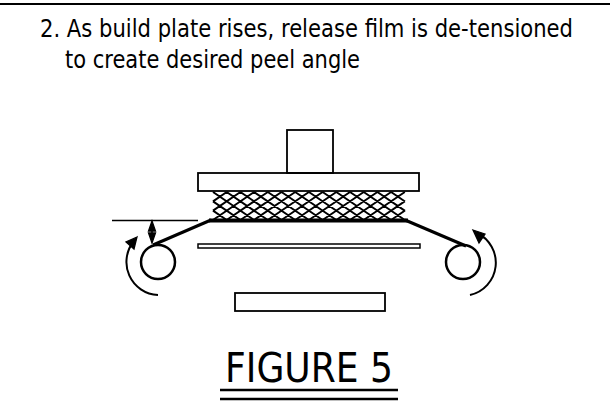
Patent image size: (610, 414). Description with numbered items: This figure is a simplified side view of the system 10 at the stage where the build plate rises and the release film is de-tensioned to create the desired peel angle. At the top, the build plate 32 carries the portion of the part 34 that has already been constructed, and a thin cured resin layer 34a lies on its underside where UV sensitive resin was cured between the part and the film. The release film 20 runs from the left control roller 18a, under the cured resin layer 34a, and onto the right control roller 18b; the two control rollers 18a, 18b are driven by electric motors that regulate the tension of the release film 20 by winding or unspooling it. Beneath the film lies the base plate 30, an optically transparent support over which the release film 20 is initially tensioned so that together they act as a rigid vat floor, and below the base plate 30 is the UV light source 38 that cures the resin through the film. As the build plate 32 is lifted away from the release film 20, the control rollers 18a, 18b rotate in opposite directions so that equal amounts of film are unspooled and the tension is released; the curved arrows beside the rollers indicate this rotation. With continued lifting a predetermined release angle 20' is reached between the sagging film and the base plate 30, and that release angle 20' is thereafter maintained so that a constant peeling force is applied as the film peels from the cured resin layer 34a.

The system 10 is at (195, 146).
The build plate 32 is at (359, 173).
The 3D part 34 is at (403, 198).
The cured resin layer 34a is at (211, 219).
The release angle 20' is at (138, 230).
The release film 20 is at (456, 221).
The control roller 18a is at (158, 265).
The control roller 18b is at (463, 262).
The base plate 30 is at (239, 249).
The UV light source 38 is at (385, 305).